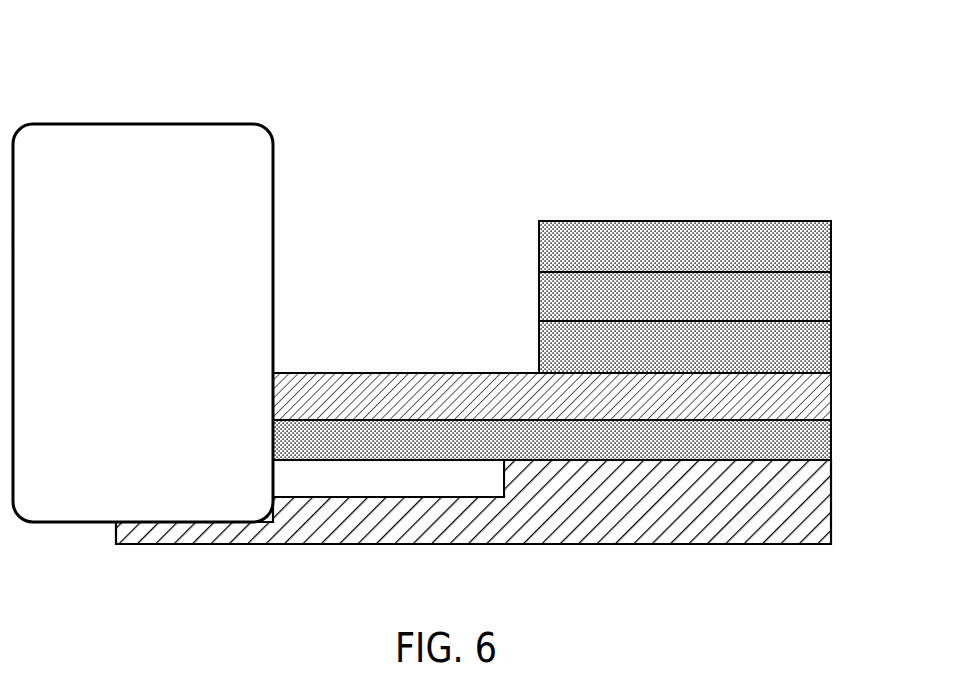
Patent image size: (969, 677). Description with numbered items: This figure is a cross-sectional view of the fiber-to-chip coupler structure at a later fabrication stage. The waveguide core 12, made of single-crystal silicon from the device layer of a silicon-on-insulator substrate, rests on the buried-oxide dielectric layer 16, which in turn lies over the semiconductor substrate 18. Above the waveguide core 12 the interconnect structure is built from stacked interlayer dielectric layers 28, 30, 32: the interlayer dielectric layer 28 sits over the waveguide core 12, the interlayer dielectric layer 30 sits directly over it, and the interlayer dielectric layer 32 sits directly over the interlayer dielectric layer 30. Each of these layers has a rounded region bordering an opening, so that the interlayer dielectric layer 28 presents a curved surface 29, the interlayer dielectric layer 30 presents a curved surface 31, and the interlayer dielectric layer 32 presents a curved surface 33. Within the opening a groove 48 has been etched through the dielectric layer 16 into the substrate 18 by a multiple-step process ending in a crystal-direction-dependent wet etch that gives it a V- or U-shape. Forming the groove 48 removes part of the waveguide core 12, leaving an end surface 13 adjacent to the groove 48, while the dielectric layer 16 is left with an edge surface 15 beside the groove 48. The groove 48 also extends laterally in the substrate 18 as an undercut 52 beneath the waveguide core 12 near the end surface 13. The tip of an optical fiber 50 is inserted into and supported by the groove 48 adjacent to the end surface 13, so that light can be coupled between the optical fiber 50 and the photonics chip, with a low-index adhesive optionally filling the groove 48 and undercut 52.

The optical fiber 50 is at (190, 123).
The groove 48 is at (182, 522).
The undercut 52 is at (408, 486).
The substrate 18 is at (795, 512).
The dielectric layer 16 is at (795, 442).
The waveguide core 12 is at (775, 401).
The end surface 13 is at (273, 399).
The edge surface 15 is at (273, 440).
The interlayer dielectric layer 28 is at (797, 353).
The surface 29 is at (539, 352).
The interlayer dielectric layer 30 is at (797, 300).
The surface 31 is at (539, 302).
The interlayer dielectric layer 32 is at (797, 253).
The surface 33 is at (539, 255).